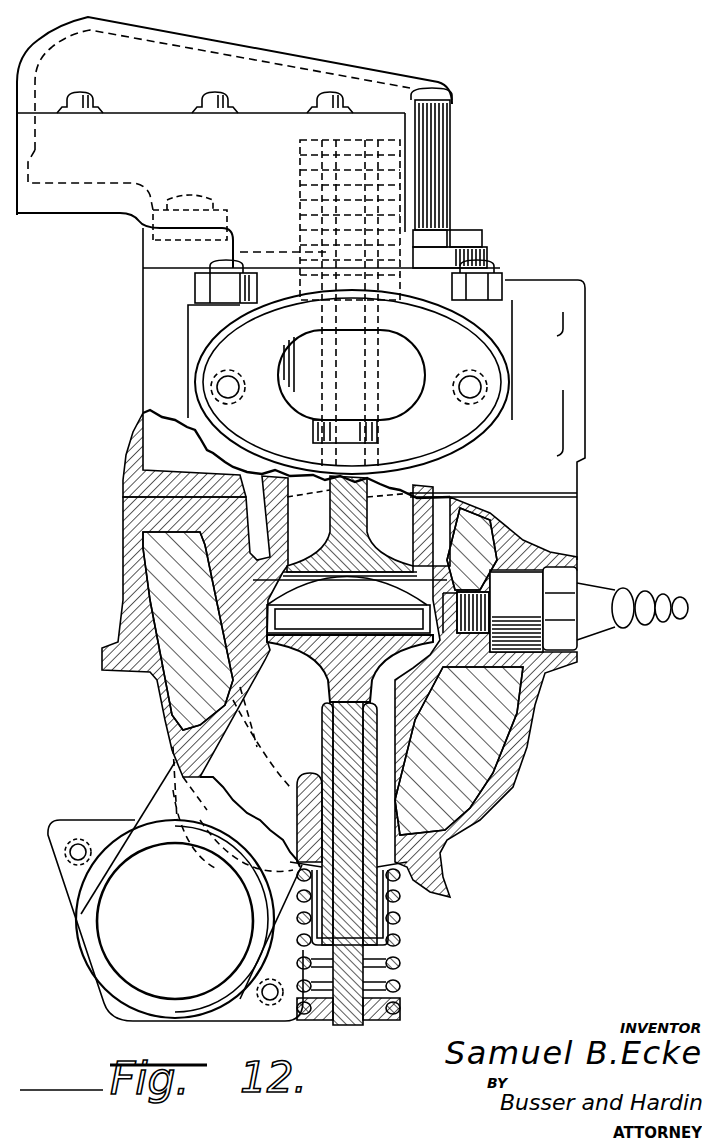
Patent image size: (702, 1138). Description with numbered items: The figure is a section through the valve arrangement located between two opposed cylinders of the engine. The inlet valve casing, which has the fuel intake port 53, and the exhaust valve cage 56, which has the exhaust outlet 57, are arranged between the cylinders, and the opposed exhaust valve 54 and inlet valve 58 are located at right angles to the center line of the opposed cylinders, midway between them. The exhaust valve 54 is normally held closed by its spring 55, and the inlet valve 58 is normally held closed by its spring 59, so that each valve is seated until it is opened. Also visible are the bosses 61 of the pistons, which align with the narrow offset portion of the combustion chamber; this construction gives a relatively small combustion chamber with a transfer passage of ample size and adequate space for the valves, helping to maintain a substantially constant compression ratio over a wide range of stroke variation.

The fuel intake port 53 is at (137, 947).
The exhaust valve 54 is at (292, 185).
The spring 55 is at (302, 200).
The exhaust valve cage 56 is at (537, 277).
The exhaust outlet 57 is at (407, 420).
The inlet valve 58 is at (383, 937).
The spring 59 is at (400, 968).
The bosses 61 is at (527, 543).